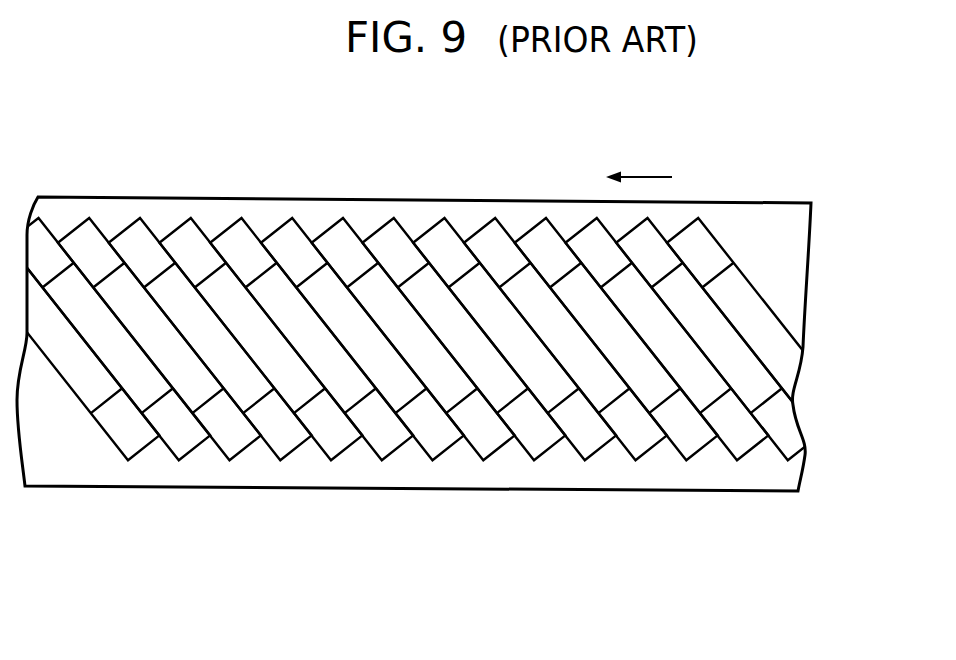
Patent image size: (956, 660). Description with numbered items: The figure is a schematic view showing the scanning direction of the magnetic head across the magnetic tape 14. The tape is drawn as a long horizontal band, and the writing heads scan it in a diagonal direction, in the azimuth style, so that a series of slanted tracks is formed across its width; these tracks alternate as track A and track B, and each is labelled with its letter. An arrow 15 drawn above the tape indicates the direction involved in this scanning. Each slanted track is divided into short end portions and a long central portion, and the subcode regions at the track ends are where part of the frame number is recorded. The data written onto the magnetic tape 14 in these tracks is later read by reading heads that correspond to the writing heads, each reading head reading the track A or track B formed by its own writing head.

The magnetic tape 14 is at (755, 202).
The direction of tape travel 15 is at (641, 173).